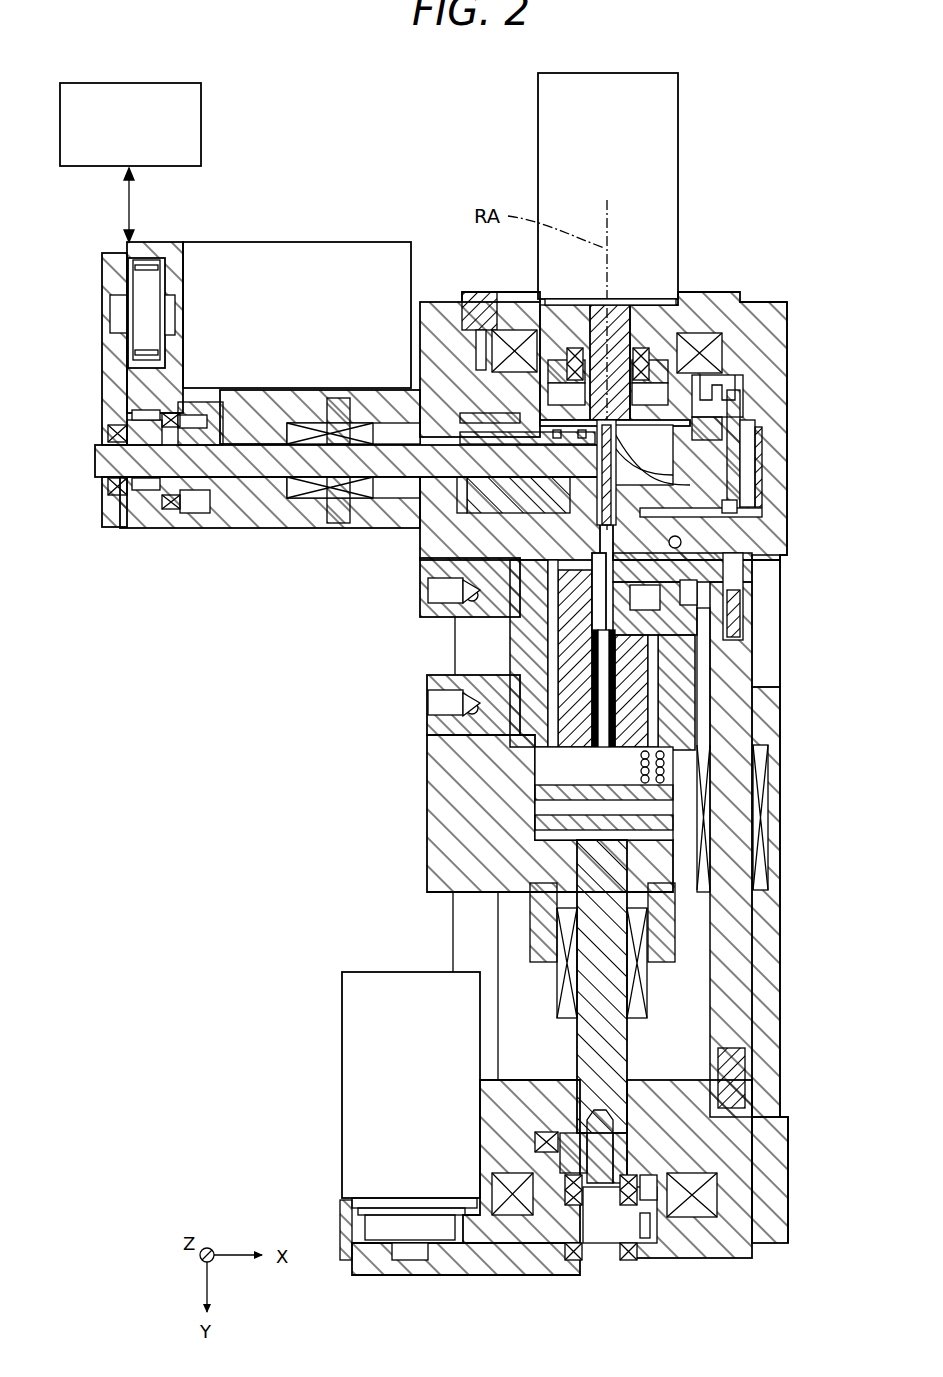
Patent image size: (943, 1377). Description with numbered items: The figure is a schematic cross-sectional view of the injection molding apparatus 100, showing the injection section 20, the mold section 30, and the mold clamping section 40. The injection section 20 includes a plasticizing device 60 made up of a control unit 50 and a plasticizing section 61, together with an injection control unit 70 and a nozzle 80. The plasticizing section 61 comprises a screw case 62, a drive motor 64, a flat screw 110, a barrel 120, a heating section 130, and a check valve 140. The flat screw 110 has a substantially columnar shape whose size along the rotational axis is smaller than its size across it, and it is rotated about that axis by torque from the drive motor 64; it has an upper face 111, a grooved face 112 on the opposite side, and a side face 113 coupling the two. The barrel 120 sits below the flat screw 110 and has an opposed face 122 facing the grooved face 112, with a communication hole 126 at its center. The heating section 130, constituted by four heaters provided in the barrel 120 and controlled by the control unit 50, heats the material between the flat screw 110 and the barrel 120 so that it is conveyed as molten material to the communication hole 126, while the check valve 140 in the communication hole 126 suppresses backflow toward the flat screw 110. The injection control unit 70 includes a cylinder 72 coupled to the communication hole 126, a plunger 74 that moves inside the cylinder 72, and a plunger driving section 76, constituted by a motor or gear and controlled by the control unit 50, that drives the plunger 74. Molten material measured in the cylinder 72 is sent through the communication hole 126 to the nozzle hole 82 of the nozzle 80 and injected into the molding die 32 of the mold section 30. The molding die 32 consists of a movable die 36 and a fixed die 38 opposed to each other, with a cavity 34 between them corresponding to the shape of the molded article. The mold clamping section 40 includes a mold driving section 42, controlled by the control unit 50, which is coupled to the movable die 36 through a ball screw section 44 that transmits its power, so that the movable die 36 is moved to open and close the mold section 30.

The injection section 20 is at (843, 228).
The mold section 30 is at (577, 897).
The molding die 32 is at (364, 628).
The cavity 34 is at (617, 645).
The movable die 36 is at (537, 648).
The fixed die 38 is at (535, 622).
The mold clamping section 40 is at (568, 1057).
The mold driving section 42 is at (383, 1068).
The ball screw section 44 is at (607, 1037).
The control unit 50 is at (172, 128).
The plasticizing device 60 is at (645, 393).
The plasticizing section 61 is at (781, 297).
The screw case 62 is at (755, 328).
The drive motor 64 is at (562, 164).
The injection control unit 70 is at (226, 545).
The cylinder 72 is at (550, 463).
The plunger 74 is at (263, 462).
The plunger driving section 76 is at (300, 278).
The nozzle 80 is at (660, 604).
The nozzle hole 82 is at (700, 569).
The injection molding apparatus 100 is at (785, 129).
The flat screw 110 is at (705, 398).
The upper face 111 is at (680, 362).
The grooved face 112 is at (750, 428).
The side face 113 is at (492, 320).
The barrel 120 is at (695, 457).
The opposed face 122 is at (715, 412).
The communication hole 126 is at (725, 507).
The heating section 130 is at (765, 460).
The check valve 140 is at (542, 318).